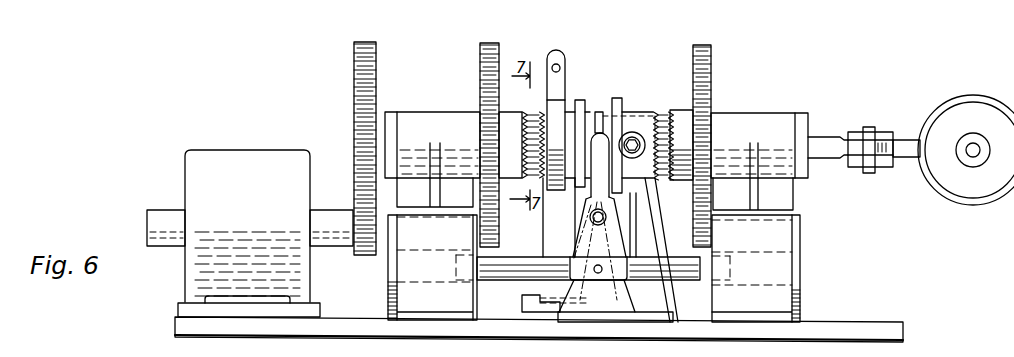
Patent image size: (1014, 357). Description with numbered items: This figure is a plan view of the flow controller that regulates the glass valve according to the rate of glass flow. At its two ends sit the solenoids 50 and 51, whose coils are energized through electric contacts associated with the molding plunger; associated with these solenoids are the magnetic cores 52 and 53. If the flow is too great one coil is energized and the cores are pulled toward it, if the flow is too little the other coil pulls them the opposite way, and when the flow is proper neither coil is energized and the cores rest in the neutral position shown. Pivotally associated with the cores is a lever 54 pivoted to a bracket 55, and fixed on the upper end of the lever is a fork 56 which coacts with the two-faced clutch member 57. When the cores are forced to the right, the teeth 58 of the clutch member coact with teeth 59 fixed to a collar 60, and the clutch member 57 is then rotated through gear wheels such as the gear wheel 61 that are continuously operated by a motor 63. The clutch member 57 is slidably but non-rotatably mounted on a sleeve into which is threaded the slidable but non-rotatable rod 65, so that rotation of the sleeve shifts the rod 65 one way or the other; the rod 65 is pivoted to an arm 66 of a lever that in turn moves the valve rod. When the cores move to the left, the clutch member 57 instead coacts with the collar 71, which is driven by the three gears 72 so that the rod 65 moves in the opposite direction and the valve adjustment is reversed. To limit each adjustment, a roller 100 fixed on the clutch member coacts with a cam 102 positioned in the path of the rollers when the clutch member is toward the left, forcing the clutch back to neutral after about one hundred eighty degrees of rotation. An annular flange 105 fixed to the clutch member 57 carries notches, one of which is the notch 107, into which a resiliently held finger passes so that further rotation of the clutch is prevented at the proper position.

The solenoid 50 is at (801, 238).
The solenoid 51 is at (392, 243).
The magnetic core 52 is at (692, 276).
The magnetic core 53 is at (496, 280).
The lever 54 is at (606, 242).
The bracket 55 is at (583, 237).
The fork 56 is at (591, 130).
The two-faced clutch member 57 is at (622, 102).
The teeth 58 is at (546, 100).
The teeth 59 is at (530, 112).
The collar 60 is at (505, 112).
The gear wheel 61 is at (488, 42).
The motor 63 is at (273, 152).
The rod 65 is at (825, 138).
The arm 66 is at (903, 162).
The collar 71 is at (683, 104).
The gears 72 is at (711, 62).
The roller 100 is at (628, 130).
The cam 102 is at (617, 100).
The annular flange 105 is at (560, 100).
The notch 107 is at (533, 146).